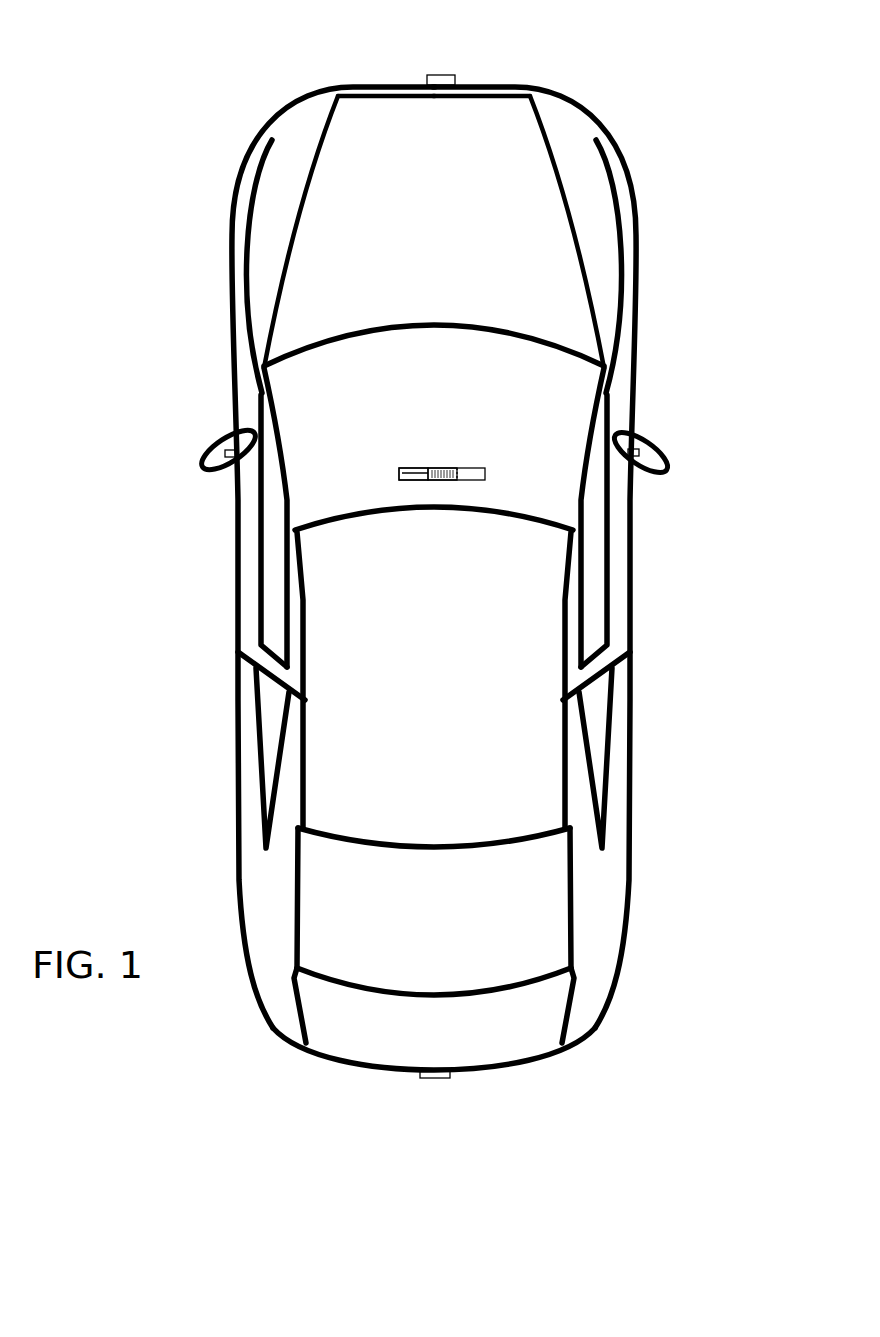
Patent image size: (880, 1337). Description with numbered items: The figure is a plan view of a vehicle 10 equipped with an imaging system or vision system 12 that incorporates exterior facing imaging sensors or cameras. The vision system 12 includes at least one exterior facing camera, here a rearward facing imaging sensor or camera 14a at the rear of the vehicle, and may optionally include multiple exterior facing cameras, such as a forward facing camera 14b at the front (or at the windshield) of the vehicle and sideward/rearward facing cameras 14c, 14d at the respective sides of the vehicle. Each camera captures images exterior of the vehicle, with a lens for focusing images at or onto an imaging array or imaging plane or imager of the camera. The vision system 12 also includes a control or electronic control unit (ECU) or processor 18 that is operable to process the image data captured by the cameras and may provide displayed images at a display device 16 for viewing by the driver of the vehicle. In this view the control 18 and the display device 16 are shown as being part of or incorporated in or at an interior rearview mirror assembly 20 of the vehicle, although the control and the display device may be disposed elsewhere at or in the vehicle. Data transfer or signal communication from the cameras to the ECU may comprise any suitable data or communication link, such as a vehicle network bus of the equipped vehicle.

The vehicle 10 is at (181, 167).
The vision system 12 is at (371, 1107).
The rearward facing camera 14a is at (437, 1075).
The forward facing camera 14b is at (445, 75).
The sideward/rearward facing camera 14c is at (223, 445).
The sideward/rearward facing camera 14d is at (653, 445).
The display device 16 is at (418, 470).
The control or electronic control unit (ECU) 18 is at (437, 468).
The interior rearview mirror assembly 20 is at (487, 468).